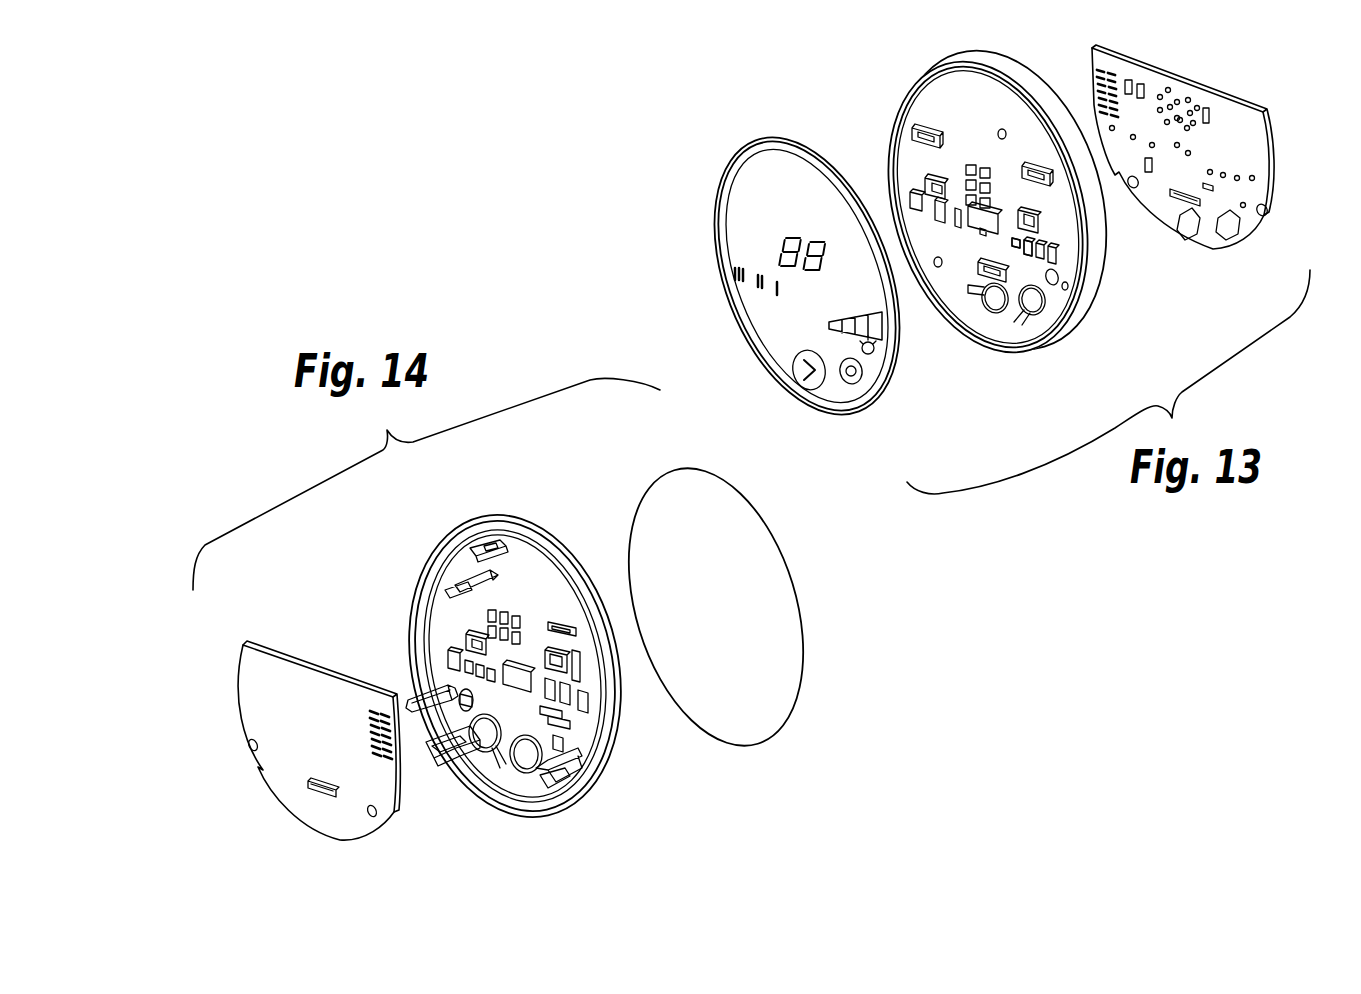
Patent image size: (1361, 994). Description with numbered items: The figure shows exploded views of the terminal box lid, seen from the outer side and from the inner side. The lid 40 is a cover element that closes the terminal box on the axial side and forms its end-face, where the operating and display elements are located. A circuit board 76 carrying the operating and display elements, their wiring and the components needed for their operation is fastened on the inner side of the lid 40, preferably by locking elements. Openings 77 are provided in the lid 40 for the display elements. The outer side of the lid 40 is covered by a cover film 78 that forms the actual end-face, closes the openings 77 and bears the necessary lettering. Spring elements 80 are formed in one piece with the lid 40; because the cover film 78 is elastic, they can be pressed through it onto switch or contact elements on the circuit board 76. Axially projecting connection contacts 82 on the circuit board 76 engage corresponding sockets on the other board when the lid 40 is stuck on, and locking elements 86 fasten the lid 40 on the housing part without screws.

In FIG. 13, the lid 40 is at (913, 83).
In FIG. 14, the lid 40 is at (442, 553).
In FIG. 13, the circuit board 76 is at (1255, 150).
In FIG. 14, the circuit board 76 is at (247, 680).
In FIG. 13, the openings 77 is at (1013, 200).
In FIG. 13, the cover film 78 is at (869, 380).
In FIG. 14, the cover film 78 is at (780, 688).
In FIG. 13, the spring elements 80 is at (995, 305).
In FIG. 13, the connection contacts 82 is at (1106, 74).
In FIG. 14, the connection contacts 82 is at (388, 758).
In FIG. 14, the locking elements 86 is at (492, 552).